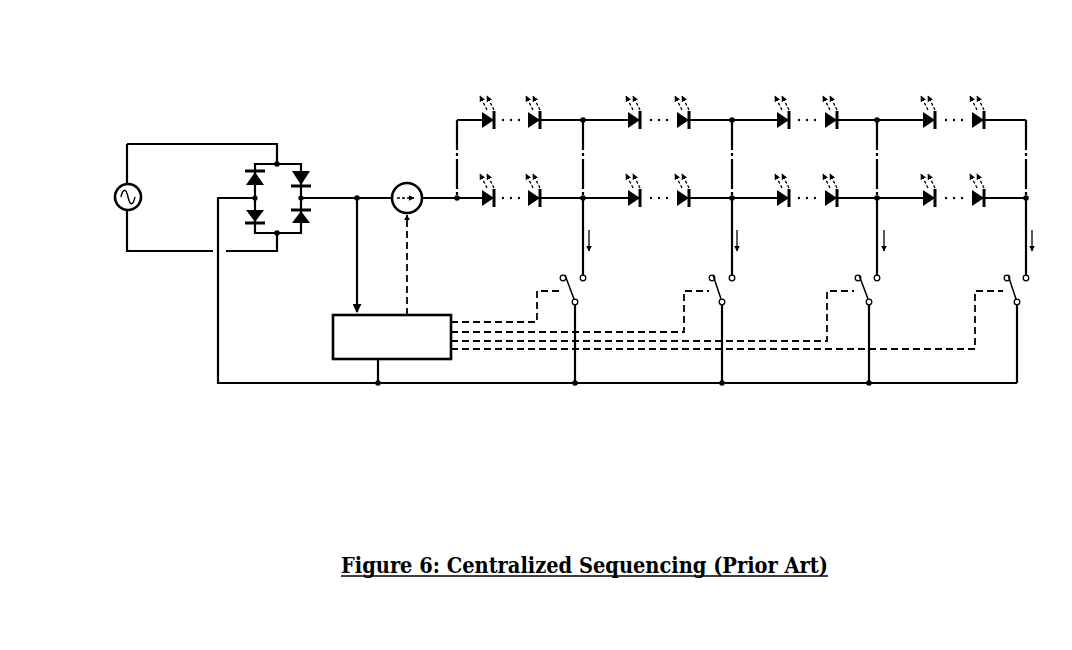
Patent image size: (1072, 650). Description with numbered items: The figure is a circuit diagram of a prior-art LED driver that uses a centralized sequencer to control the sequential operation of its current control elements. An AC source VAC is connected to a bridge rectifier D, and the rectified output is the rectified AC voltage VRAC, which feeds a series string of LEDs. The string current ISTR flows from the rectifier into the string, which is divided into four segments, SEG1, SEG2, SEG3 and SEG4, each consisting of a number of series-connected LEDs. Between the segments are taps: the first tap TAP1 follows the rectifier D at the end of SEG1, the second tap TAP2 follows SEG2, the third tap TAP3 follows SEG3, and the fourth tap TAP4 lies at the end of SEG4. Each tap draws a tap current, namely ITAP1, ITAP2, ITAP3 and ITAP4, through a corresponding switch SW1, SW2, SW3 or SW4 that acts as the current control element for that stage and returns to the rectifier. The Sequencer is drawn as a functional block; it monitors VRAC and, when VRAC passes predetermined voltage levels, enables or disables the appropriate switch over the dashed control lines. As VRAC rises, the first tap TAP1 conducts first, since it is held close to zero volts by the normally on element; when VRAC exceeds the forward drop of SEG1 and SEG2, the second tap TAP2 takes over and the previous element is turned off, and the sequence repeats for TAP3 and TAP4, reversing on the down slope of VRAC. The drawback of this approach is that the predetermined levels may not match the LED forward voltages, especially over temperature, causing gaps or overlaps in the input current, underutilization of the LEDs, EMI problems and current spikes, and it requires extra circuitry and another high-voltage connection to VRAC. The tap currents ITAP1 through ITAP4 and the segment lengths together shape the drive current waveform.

The rectifier D is at (315, 161).
The AC source VAC is at (179, 197).
The string current ISTR is at (406, 237).
The rectified AC voltage VRAC is at (352, 253).
The central sequencer Sequencer is at (668, 338).
The first LED segment SEG1 is at (514, 83).
The second LED segment SEG2 is at (664, 82).
The third LED segment SEG3 is at (818, 81).
The fourth LED segment SEG4 is at (968, 81).
The first tap TAP1 is at (566, 236).
The second tap TAP2 is at (715, 236).
The third tap TAP3 is at (862, 236).
The fourth tap TAP4 is at (1009, 236).
The first tap current ITAP1 is at (607, 240).
The second tap current ITAP2 is at (755, 240).
The third tap current ITAP3 is at (902, 240).
The fourth tap current ITAP4 is at (1050, 240).
The first switch SW1 is at (583, 329).
The second switch SW2 is at (731, 329).
The third switch SW3 is at (878, 329).
The fourth switch SW4 is at (1028, 327).